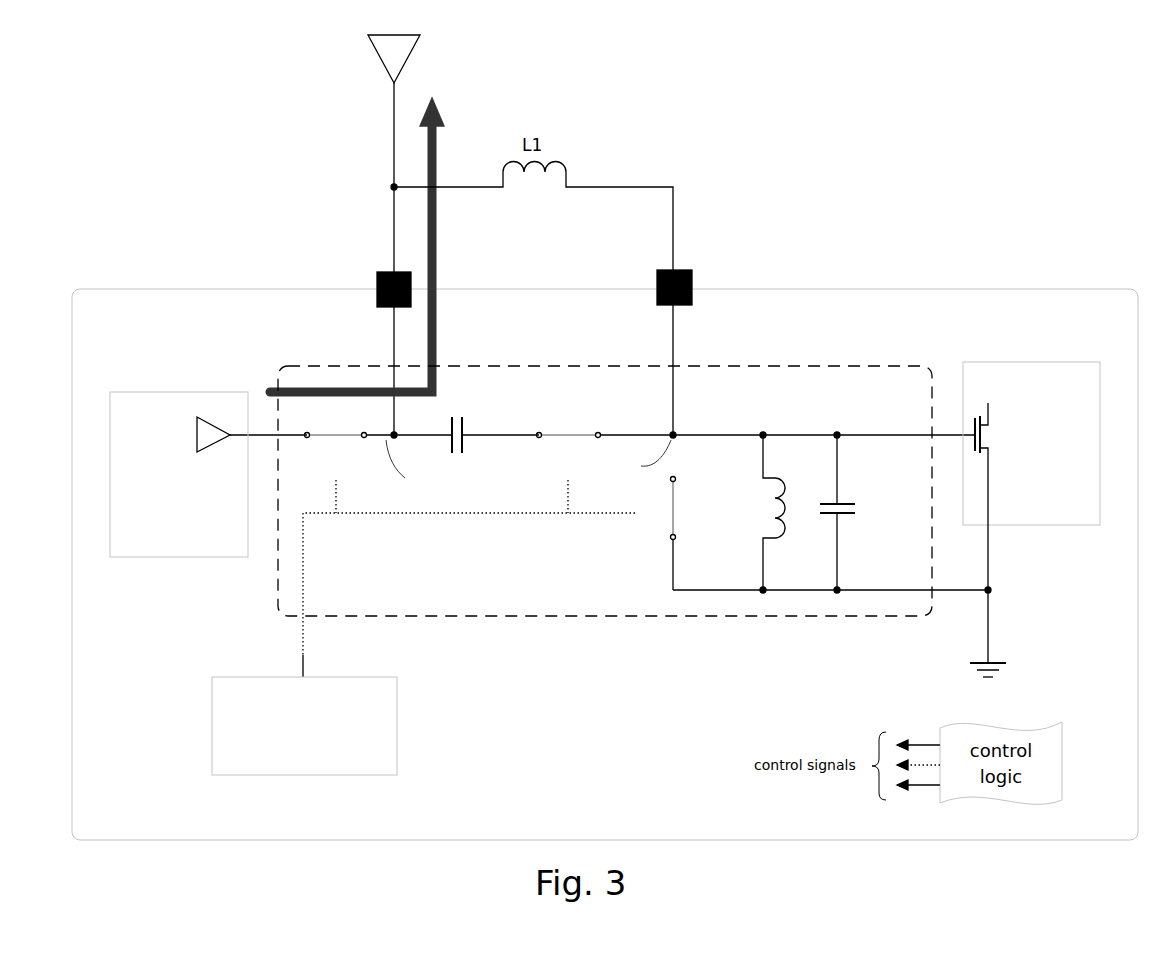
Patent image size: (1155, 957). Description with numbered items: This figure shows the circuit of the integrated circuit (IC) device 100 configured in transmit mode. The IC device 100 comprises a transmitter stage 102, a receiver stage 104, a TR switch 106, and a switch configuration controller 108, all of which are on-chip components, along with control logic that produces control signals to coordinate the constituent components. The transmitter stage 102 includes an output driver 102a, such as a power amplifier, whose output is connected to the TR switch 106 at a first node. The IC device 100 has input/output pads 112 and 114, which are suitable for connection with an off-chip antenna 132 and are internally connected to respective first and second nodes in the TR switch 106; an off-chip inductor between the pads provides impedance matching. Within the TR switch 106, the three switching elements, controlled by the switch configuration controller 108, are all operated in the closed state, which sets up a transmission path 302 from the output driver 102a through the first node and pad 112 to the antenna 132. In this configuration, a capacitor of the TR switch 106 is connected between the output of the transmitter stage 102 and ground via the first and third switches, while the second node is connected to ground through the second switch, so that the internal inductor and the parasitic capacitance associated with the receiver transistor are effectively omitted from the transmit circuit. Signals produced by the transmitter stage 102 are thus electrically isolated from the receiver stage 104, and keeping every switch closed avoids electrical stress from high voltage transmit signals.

The integrated circuit (IC) device 100 is at (930, 289).
The transmitter stage 102 is at (179, 509).
The output driver 102a is at (211, 450).
The receiver stage 104 is at (1025, 527).
The TR switch 106 is at (568, 617).
The switch configuration controller 108 is at (397, 752).
The pad 112 is at (378, 272).
The pad 114 is at (659, 270).
The antenna 132 is at (412, 63).
The transmission path 302 is at (443, 240).